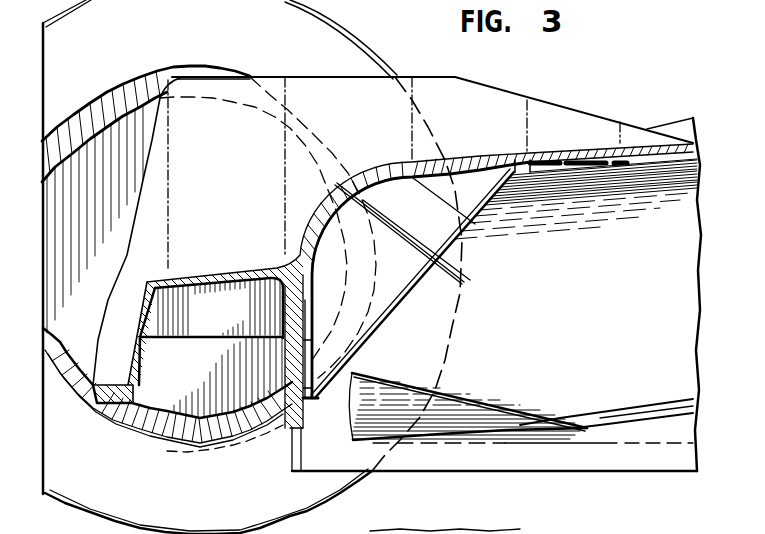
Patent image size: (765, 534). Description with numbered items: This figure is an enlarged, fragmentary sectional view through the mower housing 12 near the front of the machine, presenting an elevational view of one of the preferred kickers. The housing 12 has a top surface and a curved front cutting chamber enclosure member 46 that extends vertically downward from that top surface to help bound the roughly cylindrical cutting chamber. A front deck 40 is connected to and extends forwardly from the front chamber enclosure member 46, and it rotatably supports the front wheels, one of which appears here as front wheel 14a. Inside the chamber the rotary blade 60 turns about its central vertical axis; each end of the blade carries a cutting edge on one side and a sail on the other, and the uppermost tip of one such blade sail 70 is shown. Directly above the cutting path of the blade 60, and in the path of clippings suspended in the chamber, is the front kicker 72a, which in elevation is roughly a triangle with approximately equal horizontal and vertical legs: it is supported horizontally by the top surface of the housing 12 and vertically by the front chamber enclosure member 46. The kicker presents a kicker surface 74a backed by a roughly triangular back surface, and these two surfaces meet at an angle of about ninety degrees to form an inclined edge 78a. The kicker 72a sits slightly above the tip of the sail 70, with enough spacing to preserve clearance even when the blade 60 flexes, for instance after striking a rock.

The housing 12 is at (626, 82).
The front wheel 14a is at (355, 53).
The front deck 40 is at (240, 215).
The front cutting chamber enclosure member 46 is at (294, 373).
The kicker surface 74a is at (418, 274).
The front kicker 72a is at (486, 224).
The inclined edge 78a is at (456, 272).
The blade sail 70 is at (441, 408).
The blade 60 is at (634, 397).